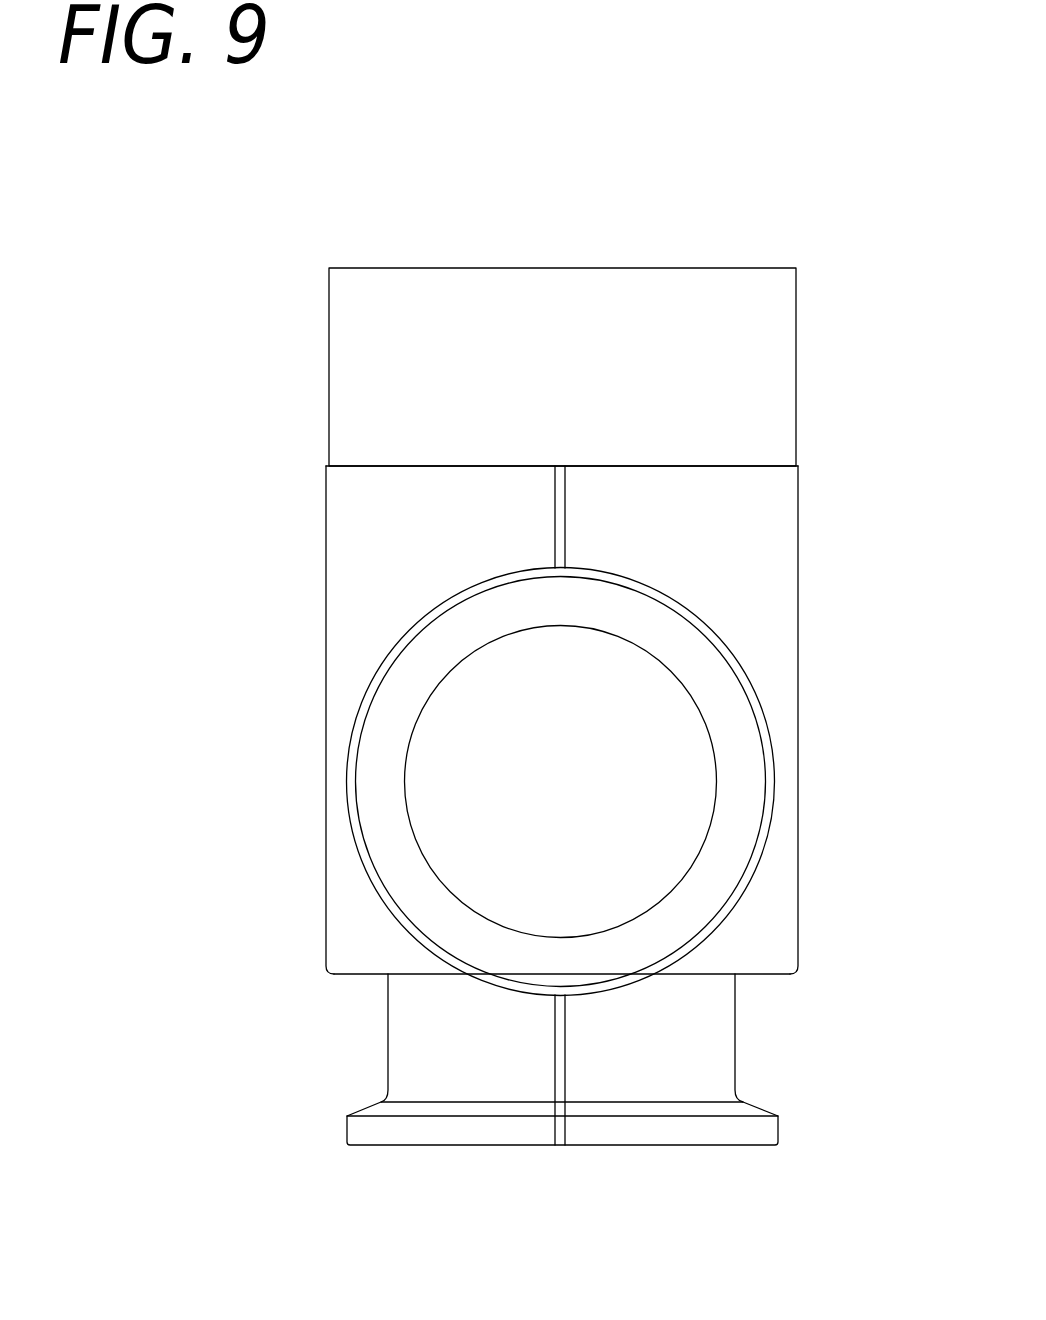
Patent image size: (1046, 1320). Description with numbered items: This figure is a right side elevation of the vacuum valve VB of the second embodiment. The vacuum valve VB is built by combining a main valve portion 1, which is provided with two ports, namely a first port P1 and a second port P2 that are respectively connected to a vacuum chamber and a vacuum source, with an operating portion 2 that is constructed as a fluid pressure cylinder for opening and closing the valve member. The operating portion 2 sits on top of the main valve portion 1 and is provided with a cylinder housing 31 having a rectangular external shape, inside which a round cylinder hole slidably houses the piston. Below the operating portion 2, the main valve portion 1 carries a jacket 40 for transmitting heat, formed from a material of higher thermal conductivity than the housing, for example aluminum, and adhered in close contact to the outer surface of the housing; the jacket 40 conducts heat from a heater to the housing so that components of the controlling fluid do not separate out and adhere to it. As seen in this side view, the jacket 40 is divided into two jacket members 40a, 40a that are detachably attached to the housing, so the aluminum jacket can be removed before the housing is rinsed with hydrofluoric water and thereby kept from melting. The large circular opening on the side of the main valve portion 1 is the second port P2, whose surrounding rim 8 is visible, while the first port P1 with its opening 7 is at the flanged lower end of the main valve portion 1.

The vacuum valve VB is at (571, 684).
The main valve portion 1 is at (857, 762).
The operating portion 2 is at (834, 346).
The cylinder housing 31 is at (430, 280).
The jacket 40 is at (805, 540).
The jacket member 40a is at (783, 643).
The seal ring 8 is at (338, 780).
The port opening 7 is at (508, 1148).
The first port P1 is at (640, 1132).
The second port P2 is at (580, 796).